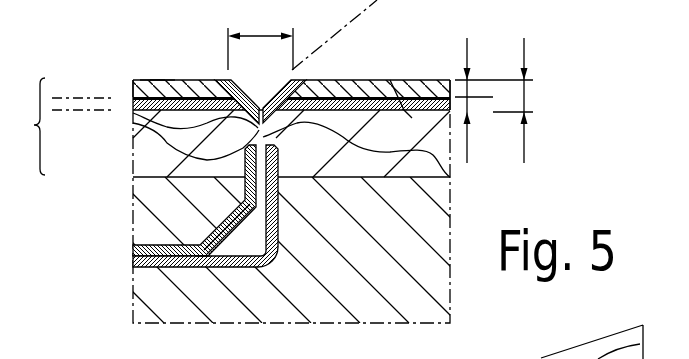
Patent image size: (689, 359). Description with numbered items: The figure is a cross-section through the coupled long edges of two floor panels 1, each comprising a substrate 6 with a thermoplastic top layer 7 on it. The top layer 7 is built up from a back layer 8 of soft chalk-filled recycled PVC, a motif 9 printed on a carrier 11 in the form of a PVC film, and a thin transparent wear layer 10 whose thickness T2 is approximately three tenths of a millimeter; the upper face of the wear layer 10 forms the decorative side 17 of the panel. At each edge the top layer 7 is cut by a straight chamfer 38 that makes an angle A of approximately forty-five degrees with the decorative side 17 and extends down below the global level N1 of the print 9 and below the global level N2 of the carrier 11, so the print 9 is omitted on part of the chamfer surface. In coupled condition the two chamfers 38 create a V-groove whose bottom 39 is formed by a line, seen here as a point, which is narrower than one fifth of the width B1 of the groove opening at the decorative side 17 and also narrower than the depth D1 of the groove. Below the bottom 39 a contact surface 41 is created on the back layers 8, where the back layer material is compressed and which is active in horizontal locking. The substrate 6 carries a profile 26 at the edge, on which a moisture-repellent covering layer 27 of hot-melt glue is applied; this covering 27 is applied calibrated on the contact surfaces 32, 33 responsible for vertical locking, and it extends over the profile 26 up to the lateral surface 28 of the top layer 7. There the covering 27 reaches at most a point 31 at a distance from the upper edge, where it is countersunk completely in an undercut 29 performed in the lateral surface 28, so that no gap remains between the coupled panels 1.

The floor panel 1 is at (424, 77).
The substrate 6 is at (187, 177).
The top layer 7 is at (33, 125).
The back layer 8 is at (410, 80).
The motif 9 is at (450, 80).
The transparent thermoplastic layer or wear layer 10 is at (155, 82).
The carrier 11 is at (132, 83).
The surface or decorative side 17 is at (390, 80).
The profile 26 is at (197, 226).
The covering layer 27 is at (133, 248).
The lateral surface 28 is at (134, 123).
The undercut 29 is at (181, 99).
The point 31 is at (151, 82).
The contact surface 32 is at (162, 249).
The contact surface 33 is at (196, 256).
The chamfer 38 is at (244, 87).
The bottom 39 is at (261, 147).
The contact surface 41 is at (450, 177).
The global level of the print N1 is at (112, 98).
The global level of the printed film or carrier N2 is at (100, 110).
The width of the opening of the V-groove B1 is at (260, 38).
The thickness of the wear layer T2 is at (470, 51).
The depth of the V-groove D1 is at (527, 51).
The angle A is at (348, 80).